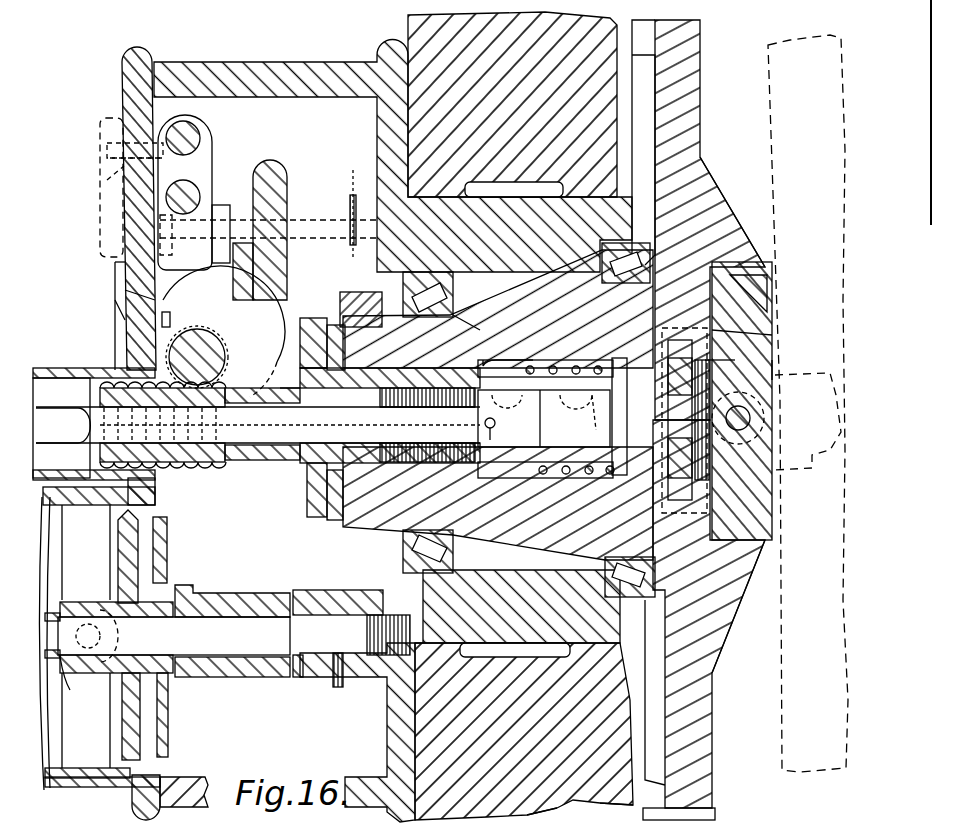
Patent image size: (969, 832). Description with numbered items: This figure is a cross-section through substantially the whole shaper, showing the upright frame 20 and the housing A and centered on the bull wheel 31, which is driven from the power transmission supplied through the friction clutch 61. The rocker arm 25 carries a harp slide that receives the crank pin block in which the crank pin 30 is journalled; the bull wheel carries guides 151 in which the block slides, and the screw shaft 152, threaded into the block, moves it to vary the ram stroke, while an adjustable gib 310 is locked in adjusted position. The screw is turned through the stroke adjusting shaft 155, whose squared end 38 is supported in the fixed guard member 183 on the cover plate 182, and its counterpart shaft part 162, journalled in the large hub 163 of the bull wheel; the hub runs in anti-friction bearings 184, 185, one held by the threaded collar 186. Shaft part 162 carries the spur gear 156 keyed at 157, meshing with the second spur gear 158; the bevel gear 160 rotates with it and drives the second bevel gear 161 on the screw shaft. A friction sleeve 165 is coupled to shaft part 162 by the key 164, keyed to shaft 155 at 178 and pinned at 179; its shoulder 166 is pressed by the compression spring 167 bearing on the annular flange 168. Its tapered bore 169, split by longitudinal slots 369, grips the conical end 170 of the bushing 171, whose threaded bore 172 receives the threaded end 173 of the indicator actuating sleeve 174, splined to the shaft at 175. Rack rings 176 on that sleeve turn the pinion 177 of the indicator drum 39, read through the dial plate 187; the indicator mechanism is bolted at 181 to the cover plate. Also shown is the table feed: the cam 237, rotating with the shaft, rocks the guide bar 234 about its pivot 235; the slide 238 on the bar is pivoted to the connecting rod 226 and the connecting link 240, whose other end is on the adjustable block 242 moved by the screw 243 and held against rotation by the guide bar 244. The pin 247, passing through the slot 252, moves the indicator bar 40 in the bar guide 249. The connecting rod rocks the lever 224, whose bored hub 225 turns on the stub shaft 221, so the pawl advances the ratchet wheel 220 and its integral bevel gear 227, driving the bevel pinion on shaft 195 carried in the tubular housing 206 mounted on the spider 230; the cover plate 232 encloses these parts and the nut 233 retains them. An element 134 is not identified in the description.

The housing A is at (266, 63).
The upright frame 20 is at (446, 30).
The bull wheel 31 is at (700, 42).
The rocker arm 25 is at (768, 120).
The guides 151 is at (735, 215).
The adjustable gib 310 is at (770, 272).
The second spur gear 158 is at (772, 300).
The spur gear 156 is at (718, 345).
The bevel gear 160 is at (700, 365).
The second bevel gear 161 is at (774, 369).
The screw shaft 152 is at (750, 415).
The crank pin 30 is at (808, 458).
The guide bar 244 is at (196, 134).
The adjustable block 242 is at (210, 163).
The screw 243 is at (190, 190).
The connecting link 240 is at (220, 205).
The slide 238 is at (282, 172).
The guide bar 234 is at (300, 200).
The pivot 235 is at (306, 220).
The indicator bar 40 is at (107, 143).
The pin 247 is at (108, 160).
The slot 252 is at (107, 180).
The bar guide 249 is at (100, 224).
The dial plate 187 is at (115, 277).
The indicator drum 39 is at (150, 297).
The cover plate 182 is at (127, 310).
The guard member 183 is at (80, 368).
The squared end 38 is at (45, 410).
The connecting rod 226 is at (236, 276).
The bolt fastening 181 is at (170, 318).
The pinion 177 is at (218, 346).
The cam 237 is at (302, 322).
The spline connection 175 is at (262, 372).
The threaded end 173 is at (293, 388).
The threaded collar 186 is at (340, 300).
The anti-friction bearing 184 is at (447, 291).
The hub 163 is at (540, 330).
The conical end 170 is at (440, 372).
The anti-friction bearing 185 is at (602, 265).
The friction sleeve 165 is at (580, 360).
The shoulder 166 is at (530, 366).
The compression spring 167 is at (578, 366).
The annular flange 168 is at (612, 362).
The bushing 171 is at (345, 345).
The tapered bore 169 is at (416, 374).
The threaded bore 172 is at (400, 400).
The longitudinal slots 369 is at (416, 420).
The key 178 is at (500, 420).
The pin 179 is at (493, 435).
The key 164 is at (594, 410).
The key 157 is at (668, 410).
The shaft part 162 is at (582, 478).
The stroke adjusting shaft 155 is at (268, 444).
The indicator actuating sleeve 174 is at (242, 462).
The rack rings 176 is at (190, 465).
The tubular housing 206 is at (118, 560).
The shaft 195 is at (100, 612).
The rocking lever 224 is at (190, 590).
The bored hub 225 is at (250, 596).
The stub shaft 221 is at (210, 655).
The nut 233 is at (66, 672).
The ratchet wheel 220 is at (168, 735).
The bevel gear 227 is at (140, 750).
The cover plate 232 is at (82, 790).
The spider 230 is at (112, 787).
The housing 134 is at (558, 818).
The friction clutch 61 is at (608, 808).